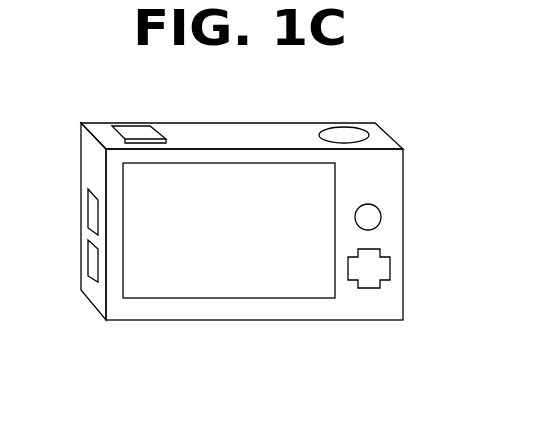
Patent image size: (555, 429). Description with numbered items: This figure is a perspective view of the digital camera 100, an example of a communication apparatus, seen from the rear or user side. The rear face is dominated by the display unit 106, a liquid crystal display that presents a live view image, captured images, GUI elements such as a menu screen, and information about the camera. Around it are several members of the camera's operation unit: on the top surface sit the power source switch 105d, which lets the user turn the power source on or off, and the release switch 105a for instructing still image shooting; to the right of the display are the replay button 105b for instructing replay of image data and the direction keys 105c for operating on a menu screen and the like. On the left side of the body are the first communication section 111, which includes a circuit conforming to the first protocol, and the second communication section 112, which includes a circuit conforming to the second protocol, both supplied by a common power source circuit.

The digital camera 100 is at (242, 221).
The display unit 106 is at (327, 185).
The power source switch 105d is at (137, 128).
The release switch 105a is at (344, 133).
The replay button 105b is at (381, 215).
The direction keys 105c is at (383, 268).
The first communication section 111 is at (88, 209).
The second communication section 112 is at (88, 261).